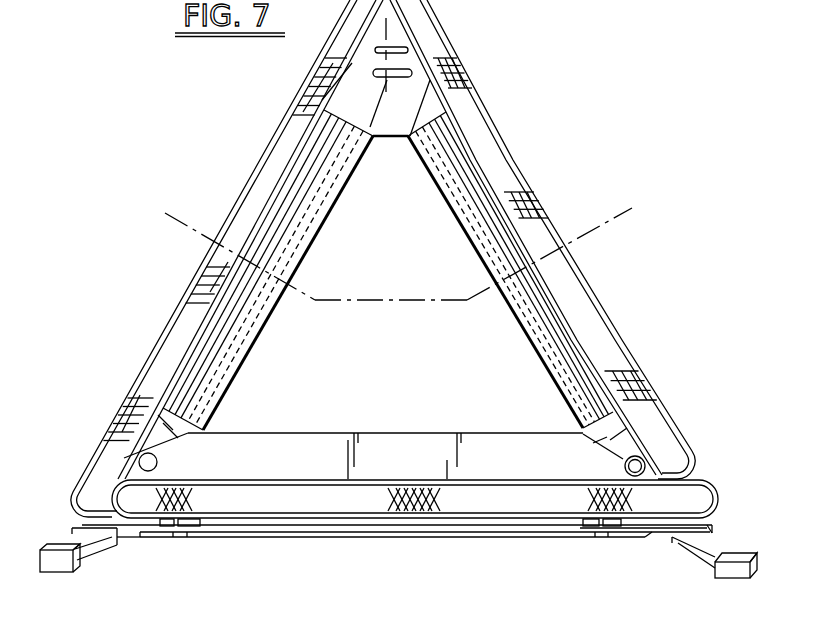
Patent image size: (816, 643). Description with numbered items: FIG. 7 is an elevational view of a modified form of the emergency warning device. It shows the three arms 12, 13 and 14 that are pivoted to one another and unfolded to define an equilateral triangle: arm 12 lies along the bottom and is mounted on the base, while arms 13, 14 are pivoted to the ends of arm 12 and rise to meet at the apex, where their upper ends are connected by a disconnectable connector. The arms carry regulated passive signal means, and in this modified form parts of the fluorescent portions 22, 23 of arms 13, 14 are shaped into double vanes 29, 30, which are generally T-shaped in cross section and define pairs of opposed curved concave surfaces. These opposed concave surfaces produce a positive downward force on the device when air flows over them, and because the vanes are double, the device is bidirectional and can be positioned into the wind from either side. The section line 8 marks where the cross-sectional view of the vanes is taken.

The section line 8- 8 is at (227, 160).
The arm 12 is at (365, 493).
The arm 13 is at (182, 338).
The arm 14 is at (583, 316).
The fluorescent portion 22 is at (372, 104).
The fluorescent portion 23 is at (395, 117).
The double vane 29 is at (247, 355).
The double vane 30 is at (537, 338).